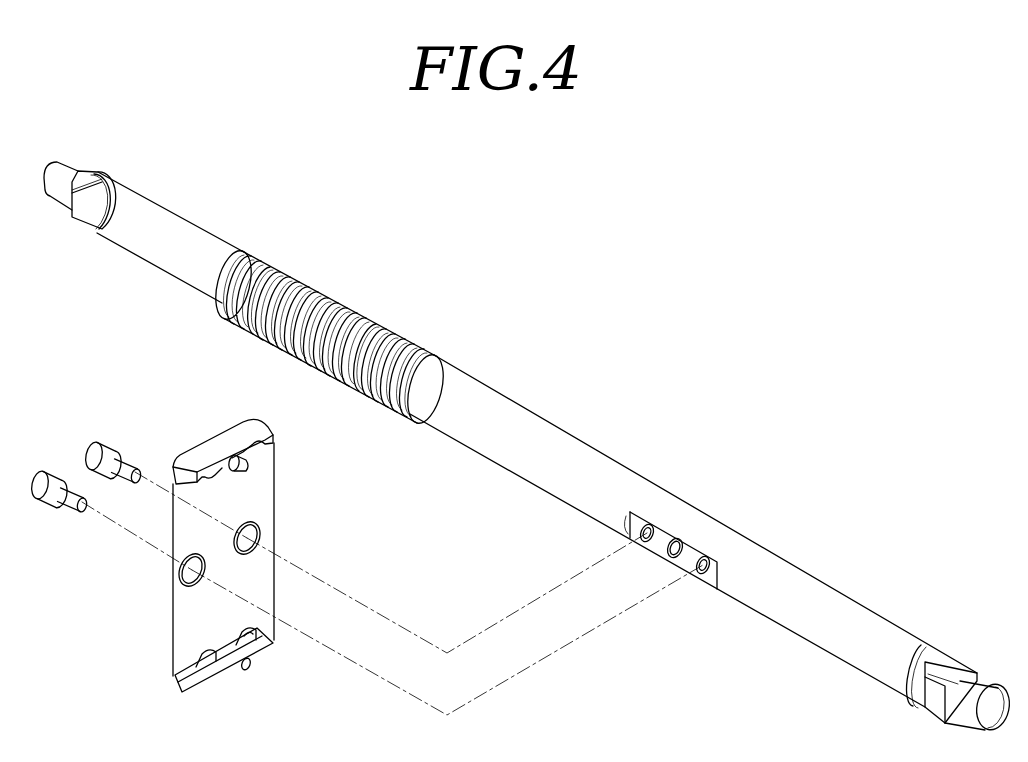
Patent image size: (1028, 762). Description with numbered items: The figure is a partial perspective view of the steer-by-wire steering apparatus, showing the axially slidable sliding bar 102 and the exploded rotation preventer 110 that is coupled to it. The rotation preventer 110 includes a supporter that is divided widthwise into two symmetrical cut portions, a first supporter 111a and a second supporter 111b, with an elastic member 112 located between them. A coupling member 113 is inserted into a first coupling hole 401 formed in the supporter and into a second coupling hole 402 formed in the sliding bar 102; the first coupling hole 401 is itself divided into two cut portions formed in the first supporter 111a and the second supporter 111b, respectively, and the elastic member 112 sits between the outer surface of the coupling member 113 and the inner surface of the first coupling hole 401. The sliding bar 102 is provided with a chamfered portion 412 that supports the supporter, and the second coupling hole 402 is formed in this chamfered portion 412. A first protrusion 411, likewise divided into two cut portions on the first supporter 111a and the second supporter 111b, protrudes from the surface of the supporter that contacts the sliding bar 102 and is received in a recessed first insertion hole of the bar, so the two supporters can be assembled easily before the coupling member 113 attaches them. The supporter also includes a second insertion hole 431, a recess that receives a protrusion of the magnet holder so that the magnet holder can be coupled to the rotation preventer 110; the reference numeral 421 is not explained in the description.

The sliding bar 102 is at (515, 430).
The rotation preventer 110 is at (128, 632).
The first supporter 111a is at (222, 442).
The second supporter 111b is at (222, 680).
The elastic member 112 is at (260, 530).
The coupling member 113 is at (42, 470).
The first coupling hole 401 is at (177, 663).
The second coupling hole 402 is at (650, 542).
The first protrusion 411 is at (248, 468).
The chamfered portion 412 is at (663, 540).
The side hole 421 is at (692, 553).
The second insertion hole 431 is at (262, 647).